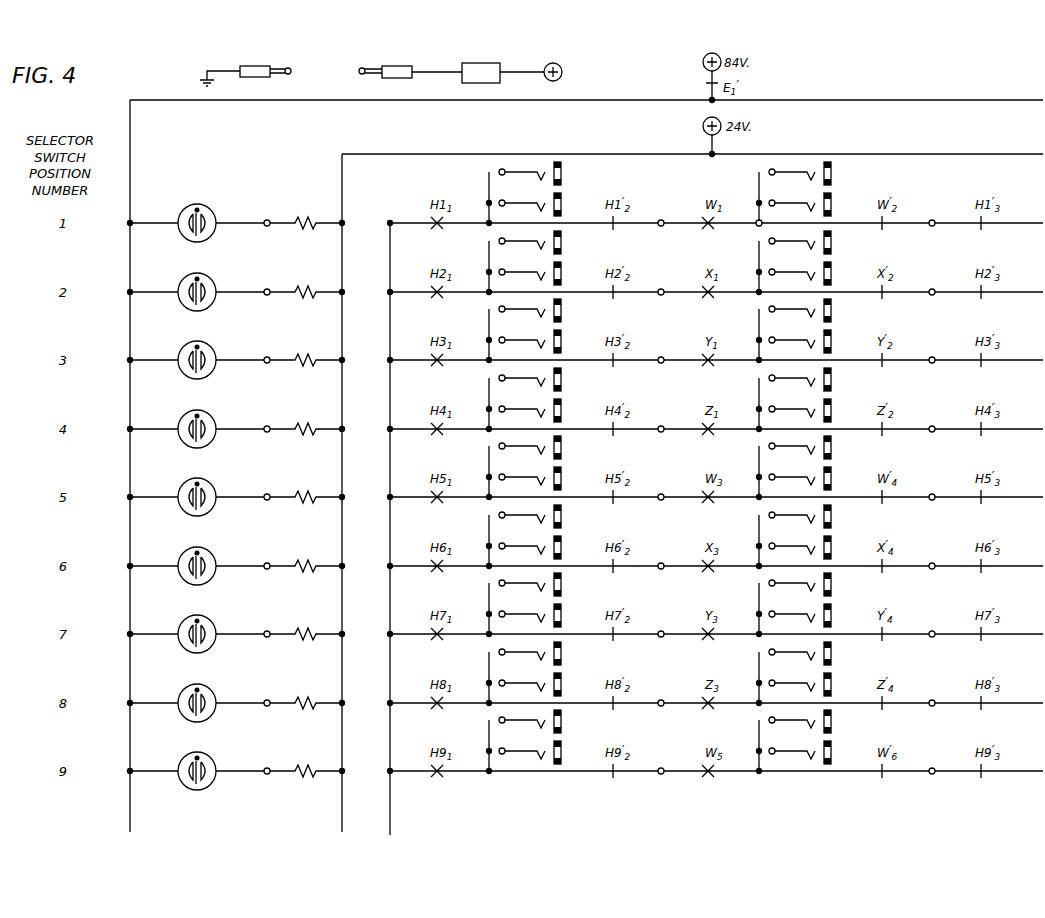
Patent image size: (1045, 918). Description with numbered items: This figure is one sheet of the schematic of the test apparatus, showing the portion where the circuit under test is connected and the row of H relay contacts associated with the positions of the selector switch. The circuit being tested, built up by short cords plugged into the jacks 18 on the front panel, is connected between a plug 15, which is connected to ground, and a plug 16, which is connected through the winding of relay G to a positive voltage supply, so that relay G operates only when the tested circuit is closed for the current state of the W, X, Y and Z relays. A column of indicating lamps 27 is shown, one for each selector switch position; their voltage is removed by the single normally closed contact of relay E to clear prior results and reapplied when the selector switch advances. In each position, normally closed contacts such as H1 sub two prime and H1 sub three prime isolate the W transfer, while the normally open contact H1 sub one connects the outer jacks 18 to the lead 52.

The plug 15 is at (264, 66).
The plug 16 is at (395, 66).
The jacks 18 is at (844, 749).
The indicating lamps 27 is at (226, 800).
The lead 52 is at (388, 405).